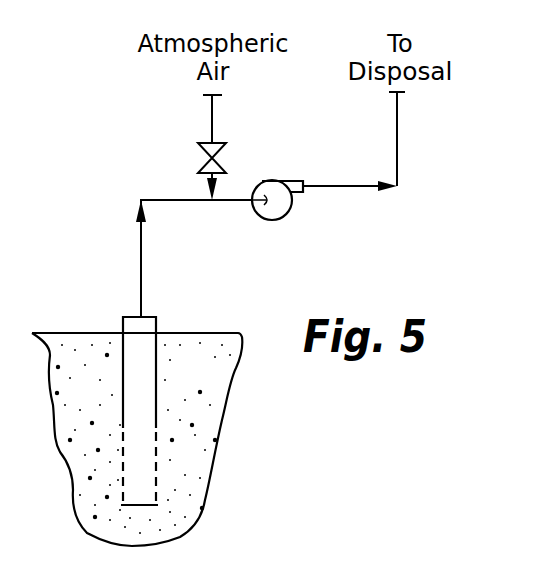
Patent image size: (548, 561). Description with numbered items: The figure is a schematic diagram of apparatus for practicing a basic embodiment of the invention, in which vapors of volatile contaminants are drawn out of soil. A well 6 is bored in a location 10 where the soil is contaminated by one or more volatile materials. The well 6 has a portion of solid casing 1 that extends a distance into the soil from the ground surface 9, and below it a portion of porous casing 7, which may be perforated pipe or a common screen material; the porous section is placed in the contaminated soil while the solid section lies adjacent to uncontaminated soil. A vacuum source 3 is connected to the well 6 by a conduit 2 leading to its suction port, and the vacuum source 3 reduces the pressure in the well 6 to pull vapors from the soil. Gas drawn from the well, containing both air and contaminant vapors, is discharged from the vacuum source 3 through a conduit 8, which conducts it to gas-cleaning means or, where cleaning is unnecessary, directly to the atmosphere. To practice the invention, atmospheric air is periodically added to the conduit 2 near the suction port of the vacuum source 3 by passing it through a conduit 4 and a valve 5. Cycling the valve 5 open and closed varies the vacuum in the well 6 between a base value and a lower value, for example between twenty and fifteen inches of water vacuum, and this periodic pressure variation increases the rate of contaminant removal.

The solid casing 1 is at (120, 393).
The conduit 2 is at (148, 245).
The vacuum source 3 is at (273, 176).
The conduit 4 is at (216, 130).
The valve 5 is at (198, 159).
The well 6 is at (118, 308).
The porous casing 7 is at (158, 462).
The conduit 8 is at (402, 128).
The ground surface 9 is at (197, 328).
The location 10 is at (212, 380).